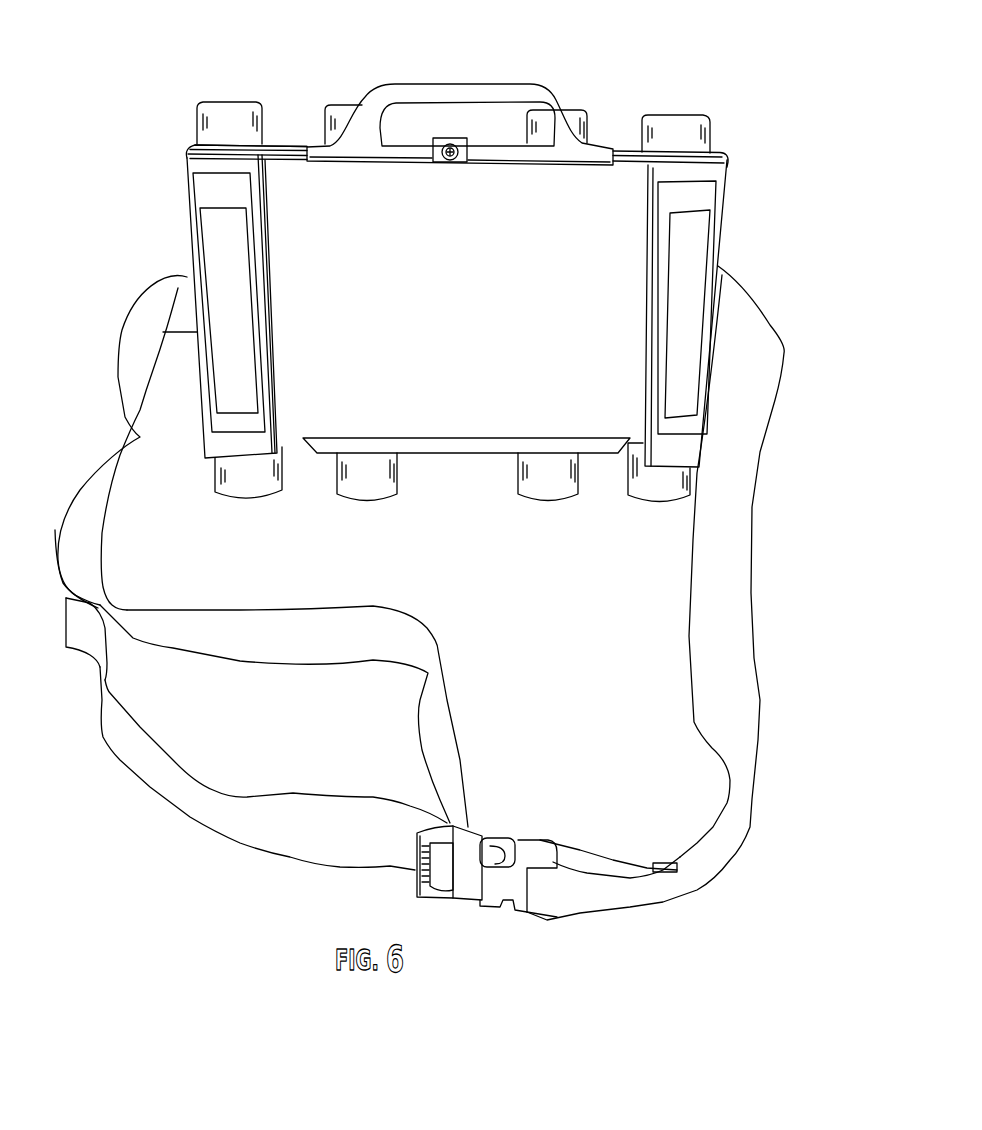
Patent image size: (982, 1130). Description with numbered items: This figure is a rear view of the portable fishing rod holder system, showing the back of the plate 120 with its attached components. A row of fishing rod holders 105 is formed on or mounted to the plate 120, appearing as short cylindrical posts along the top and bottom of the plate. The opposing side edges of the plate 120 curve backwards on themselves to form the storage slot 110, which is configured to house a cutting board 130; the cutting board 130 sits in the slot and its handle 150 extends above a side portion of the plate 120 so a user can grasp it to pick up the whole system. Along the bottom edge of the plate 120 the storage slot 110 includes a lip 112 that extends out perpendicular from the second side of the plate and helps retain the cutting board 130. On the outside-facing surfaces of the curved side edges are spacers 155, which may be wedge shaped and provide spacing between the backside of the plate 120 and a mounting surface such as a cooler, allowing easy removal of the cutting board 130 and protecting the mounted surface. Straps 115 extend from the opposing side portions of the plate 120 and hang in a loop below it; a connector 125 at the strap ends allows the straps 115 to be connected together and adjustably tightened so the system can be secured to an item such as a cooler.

The fishing rod holder 105 is at (232, 118).
The storage slot 110 is at (728, 156).
The lip 112 is at (470, 453).
The straps 115 is at (686, 877).
The plate 120 is at (285, 143).
The connector 125 is at (512, 868).
The cutting board 130 is at (613, 203).
The handle 150 is at (415, 92).
The spacers 155 is at (215, 196).